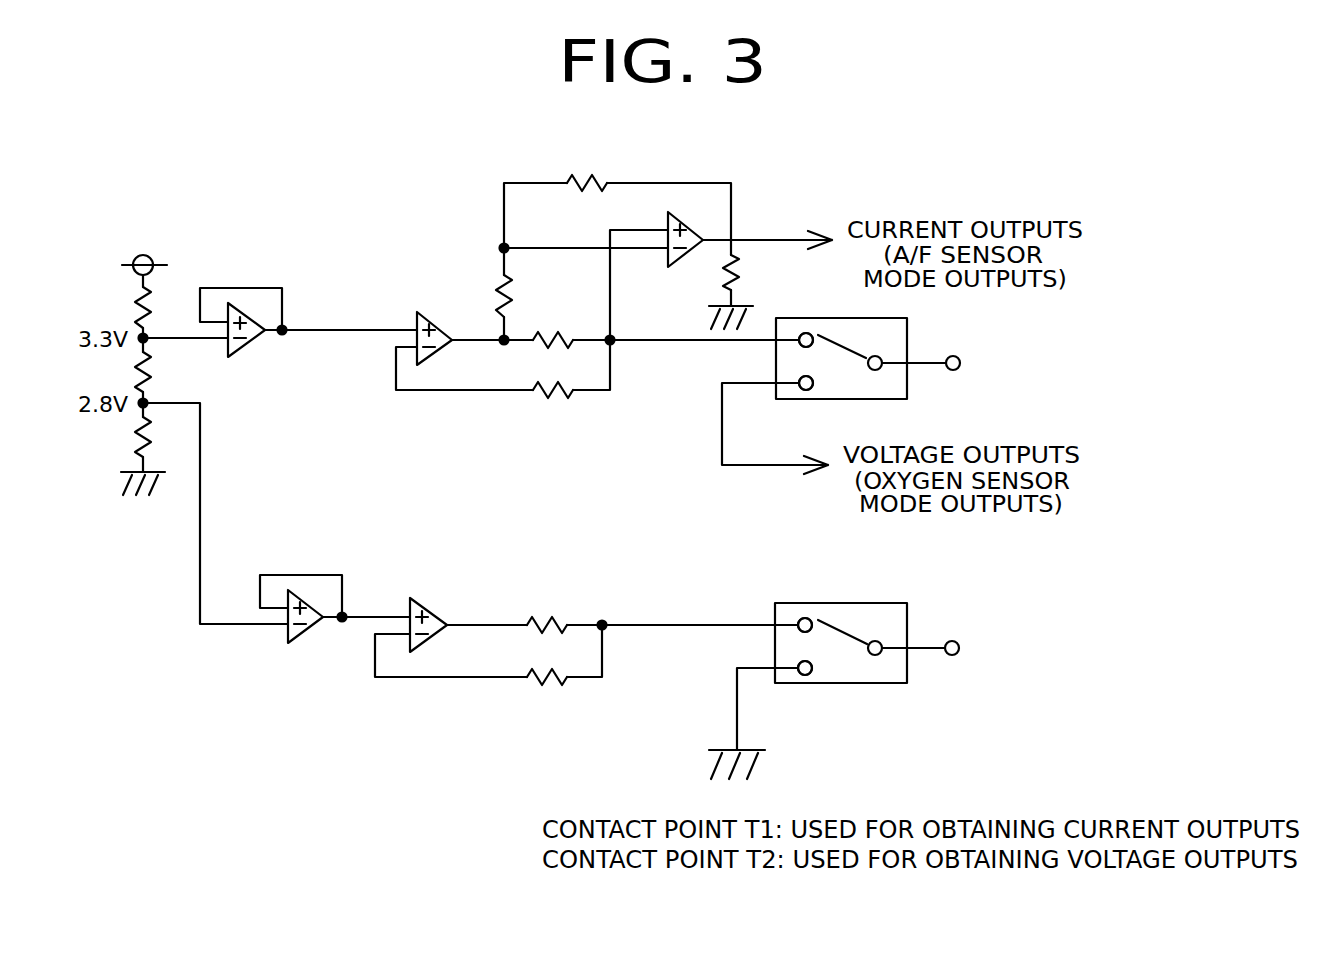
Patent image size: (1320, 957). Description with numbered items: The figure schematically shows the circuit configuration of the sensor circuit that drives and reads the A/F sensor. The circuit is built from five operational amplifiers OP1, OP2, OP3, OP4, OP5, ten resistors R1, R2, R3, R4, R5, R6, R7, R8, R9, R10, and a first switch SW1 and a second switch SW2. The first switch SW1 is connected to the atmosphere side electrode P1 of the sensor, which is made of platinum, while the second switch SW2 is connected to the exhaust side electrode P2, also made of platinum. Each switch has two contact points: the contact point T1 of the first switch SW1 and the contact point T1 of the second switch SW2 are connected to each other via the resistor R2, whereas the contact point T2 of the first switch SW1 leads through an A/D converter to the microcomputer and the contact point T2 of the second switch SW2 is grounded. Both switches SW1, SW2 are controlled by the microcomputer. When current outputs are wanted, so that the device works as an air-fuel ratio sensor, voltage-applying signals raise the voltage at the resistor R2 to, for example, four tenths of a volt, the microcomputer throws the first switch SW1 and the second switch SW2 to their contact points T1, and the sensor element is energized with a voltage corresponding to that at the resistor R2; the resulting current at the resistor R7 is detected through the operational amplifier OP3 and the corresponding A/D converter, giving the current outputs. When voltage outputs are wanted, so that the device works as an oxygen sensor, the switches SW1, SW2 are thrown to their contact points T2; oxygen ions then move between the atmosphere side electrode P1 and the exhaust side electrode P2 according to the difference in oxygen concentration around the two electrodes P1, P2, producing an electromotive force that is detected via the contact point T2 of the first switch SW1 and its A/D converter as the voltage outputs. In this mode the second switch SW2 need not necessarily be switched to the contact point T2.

The resistor R1 is at (160, 437).
The resistor R2 is at (160, 372).
The resistor R3 is at (160, 307).
The resistor R4 is at (749, 272).
The resistor R5 is at (587, 171).
The resistor R6 is at (487, 296).
The resistor R7 is at (553, 327).
The resistor R8 is at (553, 377).
The resistor R9 is at (547, 611).
The resistor R10 is at (546, 662).
The operational amplifier OP1 is at (244, 330).
The operational amplifier OP2 is at (464, 351).
The operational amplifier OP3 is at (694, 231).
The operational amplifier OP4 is at (303, 616).
The operational amplifier OP5 is at (451, 637).
The first switch SW1 is at (907, 340).
The second switch SW2 is at (907, 625).
The contact point T1 is at (802, 463).
The contact point T2 is at (802, 544).
The atmosphere side electrode P1 is at (1075, 374).
The exhaust side electrode P2 is at (1075, 658).